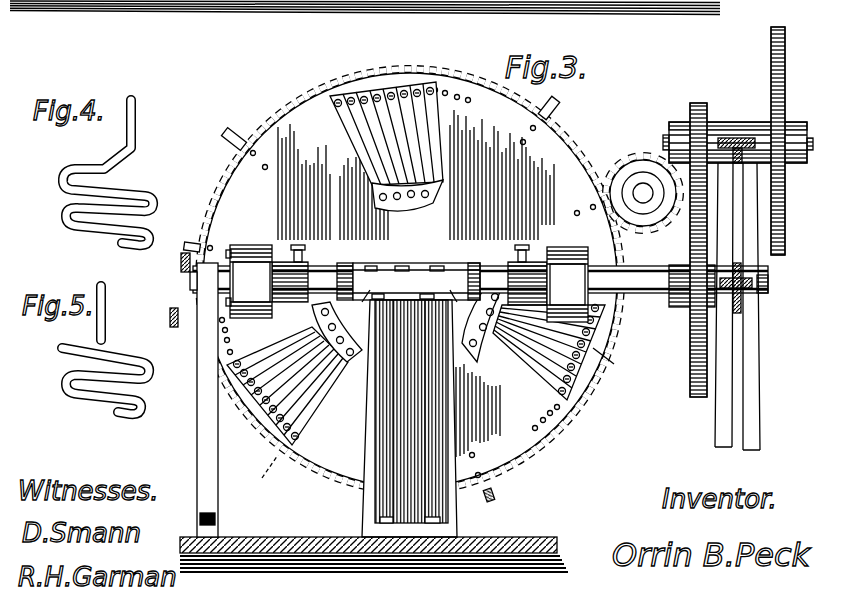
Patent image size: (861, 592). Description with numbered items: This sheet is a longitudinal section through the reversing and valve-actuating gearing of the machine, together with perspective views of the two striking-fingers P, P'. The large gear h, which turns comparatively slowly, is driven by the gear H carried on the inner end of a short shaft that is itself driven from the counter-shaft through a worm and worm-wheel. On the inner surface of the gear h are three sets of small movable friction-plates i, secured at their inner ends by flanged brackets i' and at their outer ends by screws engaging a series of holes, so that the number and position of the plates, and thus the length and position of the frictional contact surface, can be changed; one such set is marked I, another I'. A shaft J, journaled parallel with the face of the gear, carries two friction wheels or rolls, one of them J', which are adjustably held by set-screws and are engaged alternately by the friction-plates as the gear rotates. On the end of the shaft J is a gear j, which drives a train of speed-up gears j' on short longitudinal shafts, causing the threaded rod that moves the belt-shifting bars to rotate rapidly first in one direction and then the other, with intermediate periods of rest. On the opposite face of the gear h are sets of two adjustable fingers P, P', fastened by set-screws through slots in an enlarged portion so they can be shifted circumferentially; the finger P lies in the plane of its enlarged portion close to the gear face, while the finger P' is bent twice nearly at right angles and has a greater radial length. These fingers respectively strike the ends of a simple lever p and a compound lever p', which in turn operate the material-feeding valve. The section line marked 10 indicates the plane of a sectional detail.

In FIG. 3, the adjustable finger P is at (555, 110).
In FIG. 5, the adjustable finger P is at (105, 350).
In FIG. 3, the adjustable finger P' is at (242, 126).
In FIG. 4, the adjustable finger P' is at (114, 172).
In FIG. 3, the lever p is at (336, 358).
In FIG. 3, the compound lever p' is at (171, 263).
In FIG. 5, the compound lever p' is at (157, 314).
In FIG. 3, the set of friction-plates I is at (549, 354).
In FIG. 3, the set of friction-plates I' is at (376, 133).
In FIG. 3, the friction-plates i is at (416, 264).
In FIG. 3, the flanged brackets i' is at (406, 284).
In FIG. 3, the large gear h is at (408, 260).
In FIG. 3, the gear H is at (634, 181).
In FIG. 3, the shaft J is at (672, 295).
In FIG. 3, the friction wheel J' is at (548, 270).
In FIG. 3, the gear j is at (679, 250).
In FIG. 3, the speed-up gears j' is at (746, 141).
In FIG. 3, the wire 10 is at (263, 477).